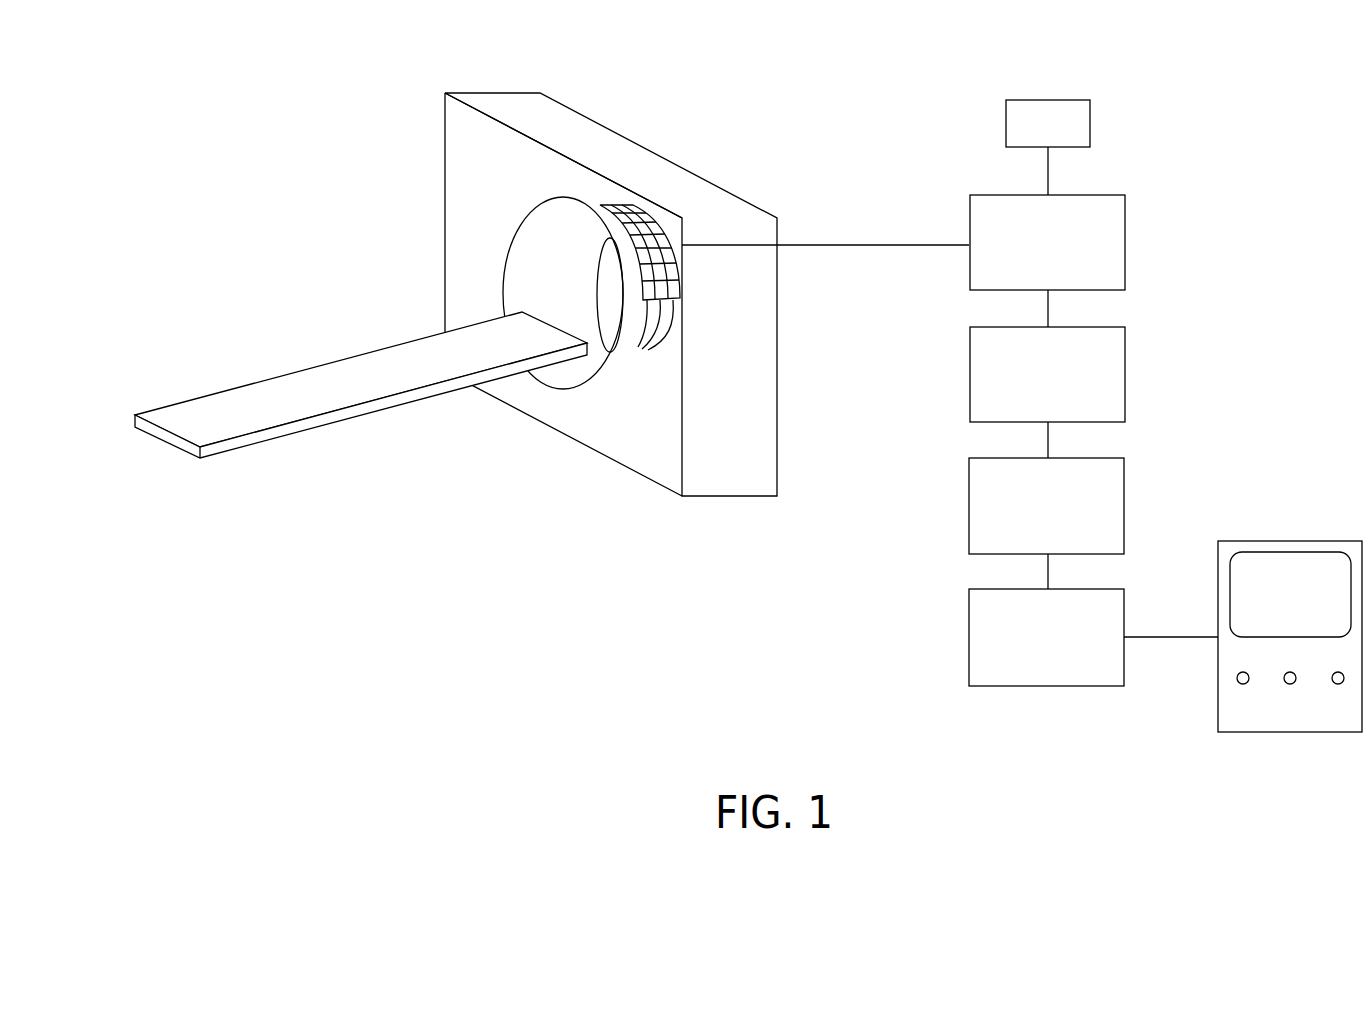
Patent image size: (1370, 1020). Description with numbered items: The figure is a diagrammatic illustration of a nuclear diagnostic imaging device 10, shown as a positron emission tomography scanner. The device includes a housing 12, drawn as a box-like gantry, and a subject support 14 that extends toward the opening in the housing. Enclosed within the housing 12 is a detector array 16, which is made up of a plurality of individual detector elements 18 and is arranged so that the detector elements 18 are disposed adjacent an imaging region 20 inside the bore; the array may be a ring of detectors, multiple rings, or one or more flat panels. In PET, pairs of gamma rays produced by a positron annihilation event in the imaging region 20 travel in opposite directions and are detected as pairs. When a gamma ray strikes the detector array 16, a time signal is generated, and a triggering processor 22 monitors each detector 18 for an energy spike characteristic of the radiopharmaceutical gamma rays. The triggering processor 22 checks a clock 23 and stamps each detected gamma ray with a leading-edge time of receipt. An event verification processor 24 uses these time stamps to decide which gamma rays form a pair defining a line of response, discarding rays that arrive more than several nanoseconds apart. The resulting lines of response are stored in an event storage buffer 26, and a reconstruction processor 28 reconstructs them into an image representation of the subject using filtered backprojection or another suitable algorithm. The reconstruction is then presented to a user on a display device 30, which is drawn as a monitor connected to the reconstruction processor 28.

The diagnostic imaging device 10 is at (747, 158).
The housing 12 is at (730, 497).
The subject support 14 is at (288, 437).
The detector array 16 is at (665, 233).
The detector elements 18 is at (648, 335).
The imaging region 20 is at (540, 282).
The triggering processor 22 is at (970, 268).
The clock 23 is at (1005, 112).
The event verification processor 24 is at (970, 390).
The event storage buffer 26 is at (969, 524).
The reconstruction processor 28 is at (969, 655).
The display device 30 is at (1218, 685).